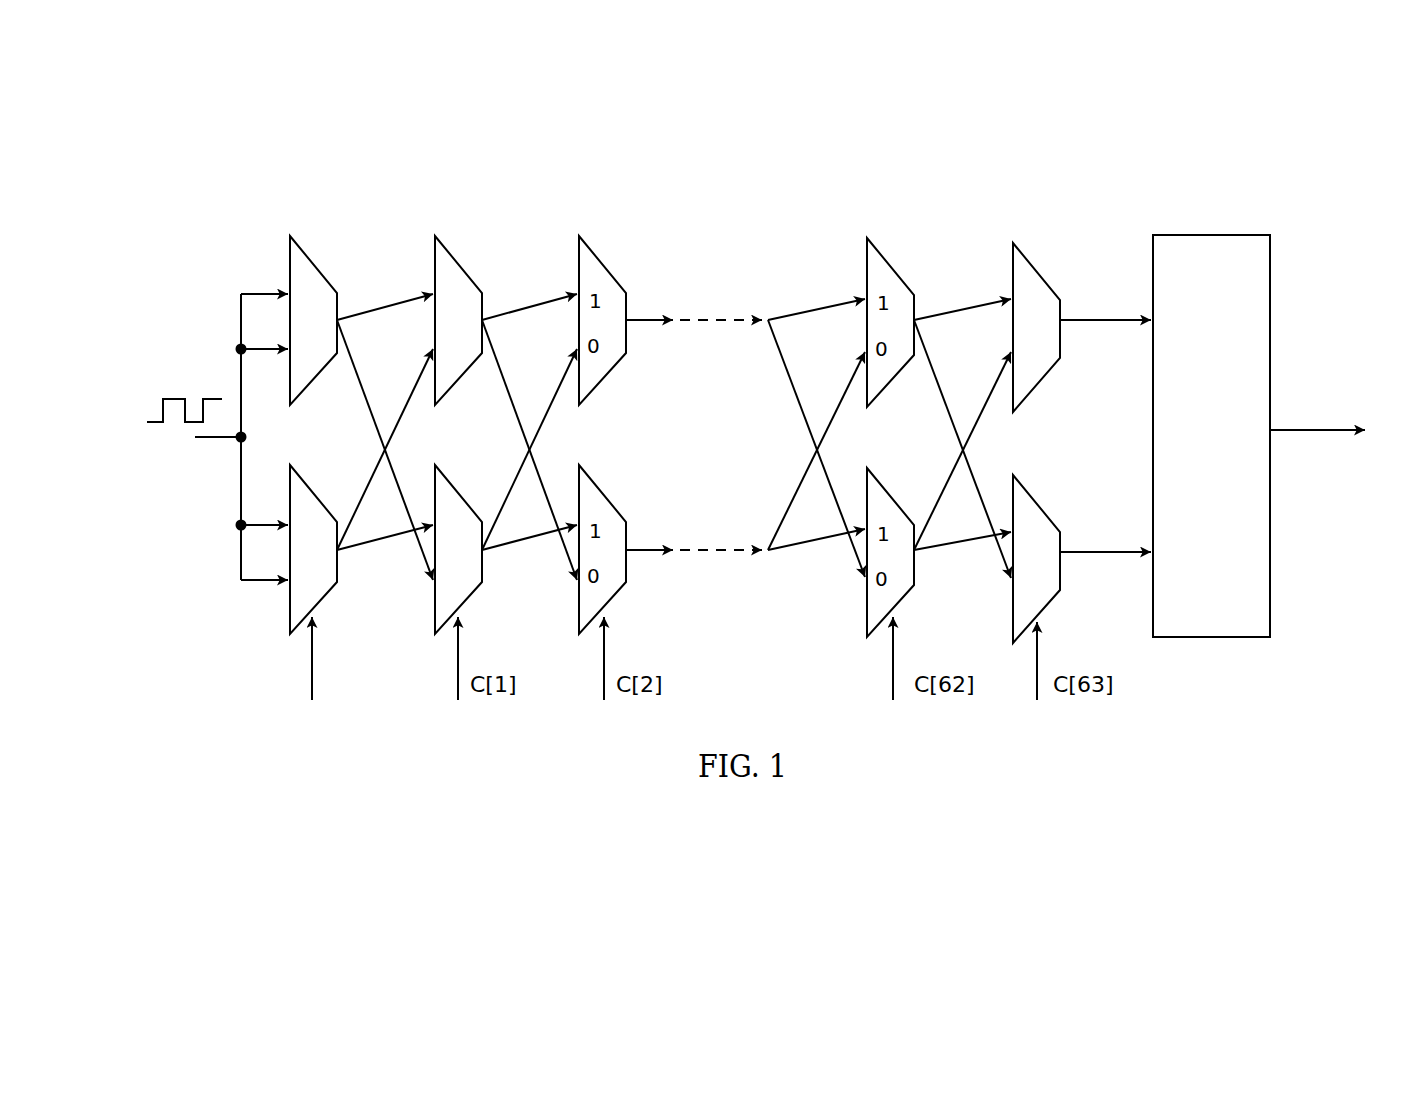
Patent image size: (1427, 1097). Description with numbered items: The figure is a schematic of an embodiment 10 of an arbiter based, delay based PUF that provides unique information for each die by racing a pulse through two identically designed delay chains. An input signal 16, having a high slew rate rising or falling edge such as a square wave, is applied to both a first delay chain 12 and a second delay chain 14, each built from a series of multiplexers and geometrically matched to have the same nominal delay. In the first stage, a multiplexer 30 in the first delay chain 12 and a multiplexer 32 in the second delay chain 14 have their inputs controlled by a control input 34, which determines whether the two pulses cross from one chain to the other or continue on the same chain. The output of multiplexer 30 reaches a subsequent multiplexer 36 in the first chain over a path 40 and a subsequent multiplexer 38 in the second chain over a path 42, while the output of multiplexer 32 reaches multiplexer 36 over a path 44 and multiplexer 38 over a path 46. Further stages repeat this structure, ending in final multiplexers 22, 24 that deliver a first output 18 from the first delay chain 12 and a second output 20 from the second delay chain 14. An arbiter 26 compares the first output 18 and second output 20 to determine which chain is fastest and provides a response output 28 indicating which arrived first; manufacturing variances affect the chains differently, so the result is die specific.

The arbiter based PUF 10 is at (829, 186).
The first delay chain 12 is at (208, 237).
The second delay chain 14 is at (214, 480).
The input signal 16 is at (215, 438).
The first output 18 is at (1095, 319).
The second output 20 is at (1094, 551).
The last multiplexer of first path 22 is at (1036, 327).
The last multiplexer of second path 24 is at (1036, 559).
The arbiter 26 is at (1211, 436).
The response output 28 is at (1299, 430).
The multiplexer 30 is at (313, 320).
The multiplexer 32 is at (313, 549).
The control input 34 is at (311, 657).
The subsequent multiplexer 36 is at (458, 320).
The subsequent multiplexer 38 is at (458, 549).
The path 40 is at (367, 312).
The path 42 is at (374, 418).
The path 44 is at (376, 468).
The path 46 is at (352, 549).